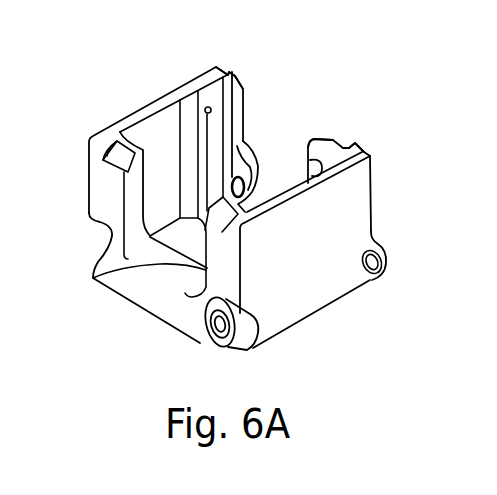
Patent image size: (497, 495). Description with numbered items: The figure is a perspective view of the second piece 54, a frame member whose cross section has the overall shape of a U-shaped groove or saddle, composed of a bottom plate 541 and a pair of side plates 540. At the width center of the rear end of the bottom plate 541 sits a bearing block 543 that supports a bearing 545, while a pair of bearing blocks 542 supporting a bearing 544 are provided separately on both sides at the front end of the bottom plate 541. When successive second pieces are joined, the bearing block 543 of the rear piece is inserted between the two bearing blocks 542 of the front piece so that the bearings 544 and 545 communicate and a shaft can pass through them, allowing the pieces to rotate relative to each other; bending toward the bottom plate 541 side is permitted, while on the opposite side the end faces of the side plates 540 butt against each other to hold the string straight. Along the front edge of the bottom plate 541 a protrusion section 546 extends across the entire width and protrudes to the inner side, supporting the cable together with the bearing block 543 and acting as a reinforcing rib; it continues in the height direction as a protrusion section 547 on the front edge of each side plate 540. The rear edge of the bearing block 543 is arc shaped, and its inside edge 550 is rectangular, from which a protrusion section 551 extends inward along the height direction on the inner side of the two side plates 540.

The second piece 54 is at (190, 58).
The side plates 540 is at (138, 111).
The bottom plate 541 is at (178, 245).
The bearing blocks 542 is at (255, 206).
The bearing block 543 is at (160, 320).
The bearing 544 is at (385, 277).
The bearing 545 is at (196, 342).
The protrusion section 546 is at (297, 146).
The protrusion section 547 is at (248, 108).
The inside edge 550 is at (175, 270).
The protrusion section 551 is at (133, 187).